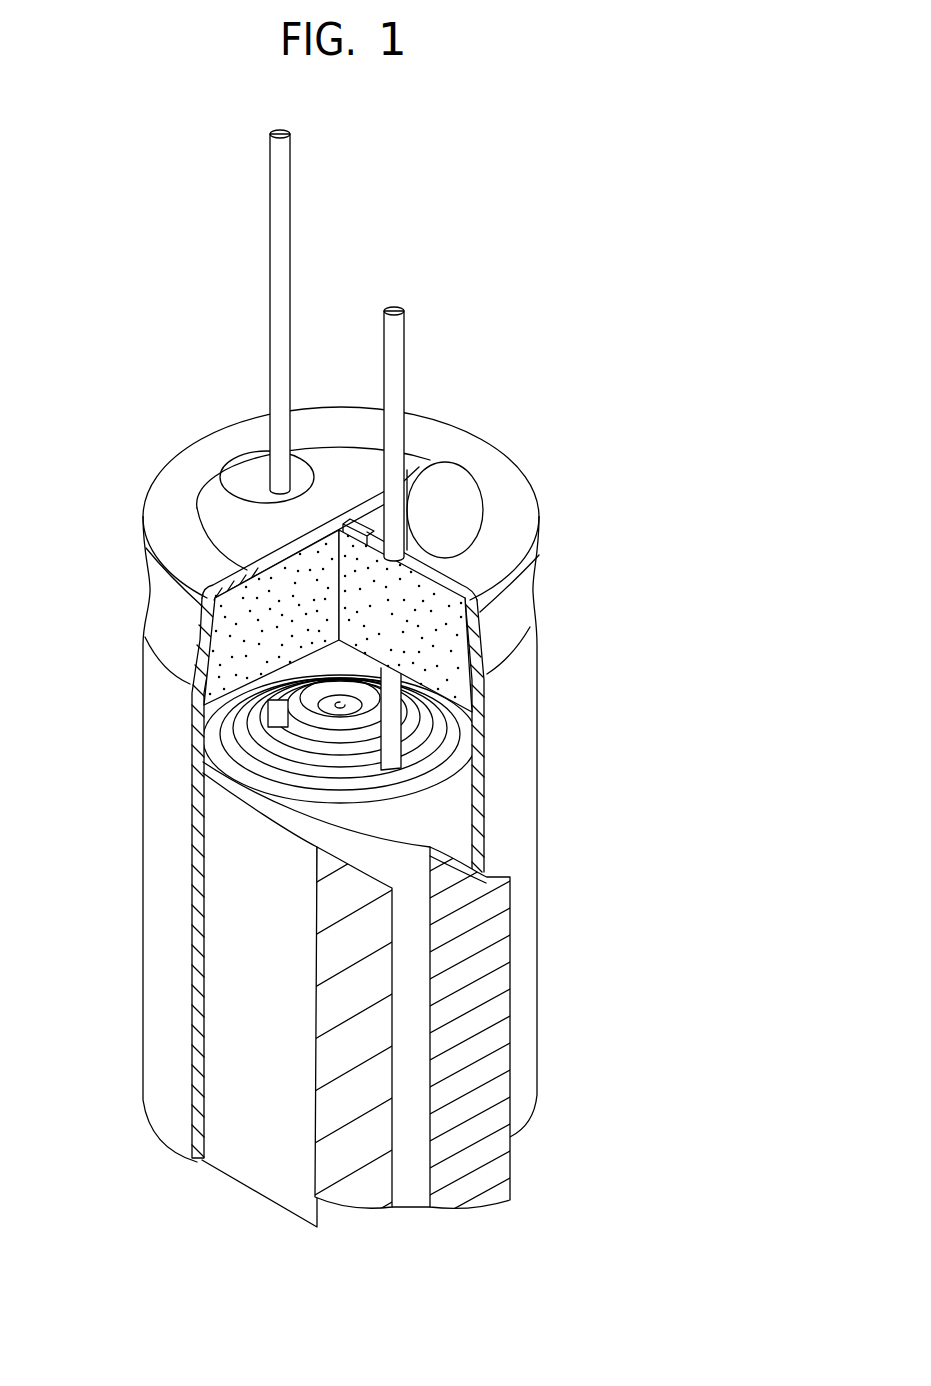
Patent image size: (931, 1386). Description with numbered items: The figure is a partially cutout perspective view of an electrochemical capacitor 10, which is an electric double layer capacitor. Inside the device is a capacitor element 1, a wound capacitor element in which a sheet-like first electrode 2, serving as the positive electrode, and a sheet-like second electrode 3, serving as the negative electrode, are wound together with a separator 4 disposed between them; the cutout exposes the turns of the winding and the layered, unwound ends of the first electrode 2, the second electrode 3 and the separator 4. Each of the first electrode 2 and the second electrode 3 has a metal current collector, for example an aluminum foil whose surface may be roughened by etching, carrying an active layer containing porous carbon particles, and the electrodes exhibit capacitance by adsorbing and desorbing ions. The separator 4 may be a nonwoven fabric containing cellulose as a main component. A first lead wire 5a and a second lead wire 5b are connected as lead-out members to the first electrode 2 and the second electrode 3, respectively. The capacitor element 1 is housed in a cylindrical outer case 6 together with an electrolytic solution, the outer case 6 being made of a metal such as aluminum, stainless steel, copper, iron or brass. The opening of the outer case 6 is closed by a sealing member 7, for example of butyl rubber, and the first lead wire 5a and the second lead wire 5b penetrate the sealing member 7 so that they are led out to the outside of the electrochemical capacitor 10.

The electrochemical capacitor 10 is at (130, 199).
The capacitor element 1 is at (205, 760).
The first electrode 2 is at (510, 888).
The second electrode 3 is at (353, 913).
The separator 4 is at (415, 1199).
The first lead wire 5a is at (282, 213).
The second lead wire 5b is at (395, 343).
The outer case 6 is at (527, 660).
The sealing member 7 is at (237, 640).